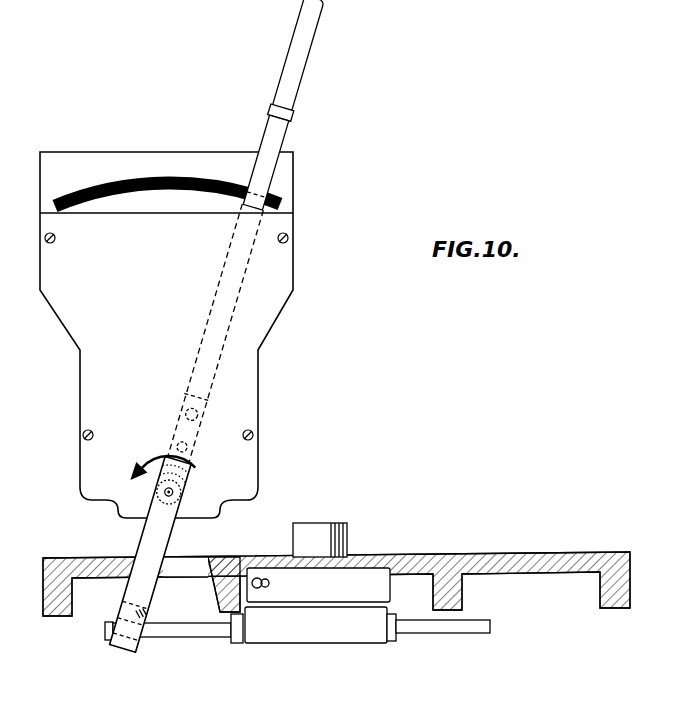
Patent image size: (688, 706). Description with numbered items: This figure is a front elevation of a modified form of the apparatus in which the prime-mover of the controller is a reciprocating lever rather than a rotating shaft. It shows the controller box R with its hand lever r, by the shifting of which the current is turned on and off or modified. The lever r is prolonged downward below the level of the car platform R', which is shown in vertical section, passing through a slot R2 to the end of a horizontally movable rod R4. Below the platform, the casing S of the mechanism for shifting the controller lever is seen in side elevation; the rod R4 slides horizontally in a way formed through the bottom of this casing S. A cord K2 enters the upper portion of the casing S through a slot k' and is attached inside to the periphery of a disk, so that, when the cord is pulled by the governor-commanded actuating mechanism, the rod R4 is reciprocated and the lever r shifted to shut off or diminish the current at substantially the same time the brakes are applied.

The hand lever r is at (275, 138).
The controller box R is at (166, 335).
The car platform R' is at (336, 569).
The slot R2 is at (173, 570).
The horizontally movable rod R4 is at (184, 632).
The casing S is at (318, 585).
The slot k' is at (275, 587).
The cord K2 is at (262, 589).